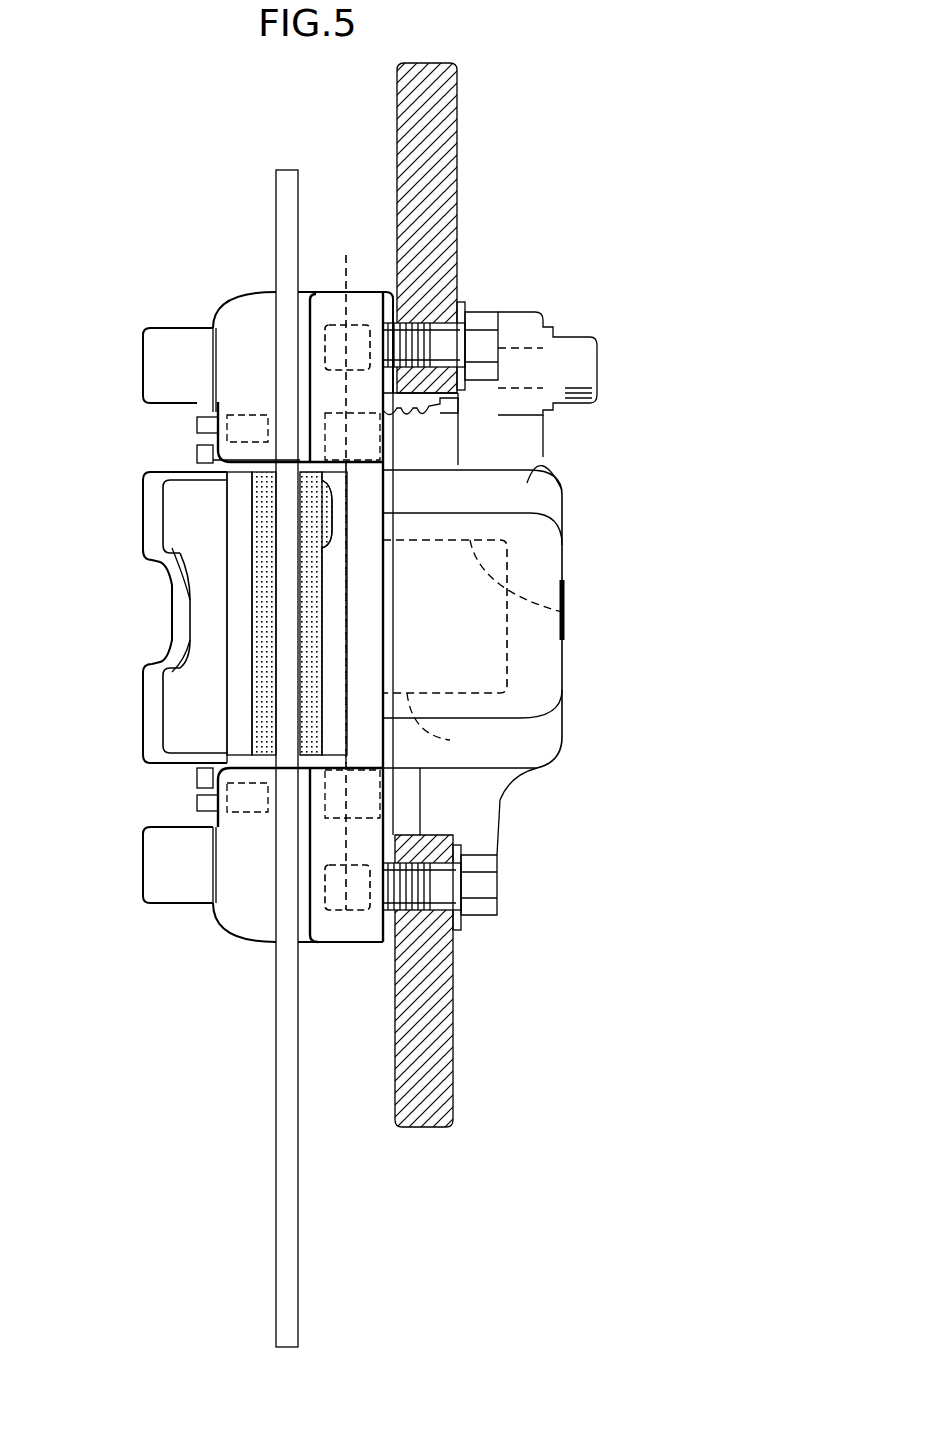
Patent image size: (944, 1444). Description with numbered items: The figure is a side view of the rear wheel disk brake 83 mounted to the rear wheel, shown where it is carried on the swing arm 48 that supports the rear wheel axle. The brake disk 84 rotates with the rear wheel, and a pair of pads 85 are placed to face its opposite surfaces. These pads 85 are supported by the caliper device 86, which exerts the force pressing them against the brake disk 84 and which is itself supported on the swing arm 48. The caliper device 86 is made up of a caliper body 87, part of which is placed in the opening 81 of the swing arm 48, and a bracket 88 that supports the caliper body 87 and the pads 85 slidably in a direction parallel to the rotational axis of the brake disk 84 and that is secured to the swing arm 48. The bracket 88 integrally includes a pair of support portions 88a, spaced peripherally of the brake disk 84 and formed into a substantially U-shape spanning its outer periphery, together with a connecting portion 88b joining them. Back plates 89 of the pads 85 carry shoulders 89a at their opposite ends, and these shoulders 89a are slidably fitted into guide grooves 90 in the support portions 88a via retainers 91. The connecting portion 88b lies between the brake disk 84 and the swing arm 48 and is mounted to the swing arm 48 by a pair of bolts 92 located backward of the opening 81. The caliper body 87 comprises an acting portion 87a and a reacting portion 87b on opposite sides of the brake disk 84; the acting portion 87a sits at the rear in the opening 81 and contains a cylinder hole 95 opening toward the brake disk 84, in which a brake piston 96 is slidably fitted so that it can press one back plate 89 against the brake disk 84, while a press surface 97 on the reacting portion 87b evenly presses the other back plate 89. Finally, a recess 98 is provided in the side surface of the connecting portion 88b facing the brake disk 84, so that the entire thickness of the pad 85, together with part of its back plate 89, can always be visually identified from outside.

The swing arm 48 is at (445, 1045).
The opening 81 is at (410, 835).
The rear wheel disk brake 83 is at (297, 1175).
The brake disk 84 is at (288, 583).
The pads 85 is at (262, 745).
The caliper device 86 is at (526, 318).
The caliper body 87 is at (530, 617).
The acting portion 87a is at (528, 483).
The reacting portion 87b is at (152, 530).
The bracket 88 is at (283, 632).
The support portions 88a is at (243, 322).
The connecting portion 88b is at (385, 555).
The back plates 89 is at (243, 638).
The shoulders 89a is at (240, 418).
The guide grooves 90 is at (195, 425).
The retainers 91 is at (197, 455).
The bolts 92 is at (480, 305).
The cylinder hole 95 is at (562, 612).
The brake piston 96 is at (445, 646).
The press surface 97 is at (240, 532).
The recess 98 is at (312, 510).